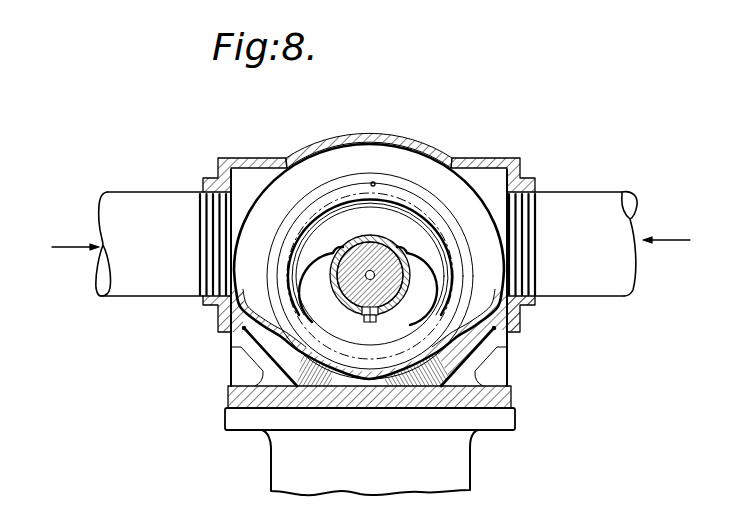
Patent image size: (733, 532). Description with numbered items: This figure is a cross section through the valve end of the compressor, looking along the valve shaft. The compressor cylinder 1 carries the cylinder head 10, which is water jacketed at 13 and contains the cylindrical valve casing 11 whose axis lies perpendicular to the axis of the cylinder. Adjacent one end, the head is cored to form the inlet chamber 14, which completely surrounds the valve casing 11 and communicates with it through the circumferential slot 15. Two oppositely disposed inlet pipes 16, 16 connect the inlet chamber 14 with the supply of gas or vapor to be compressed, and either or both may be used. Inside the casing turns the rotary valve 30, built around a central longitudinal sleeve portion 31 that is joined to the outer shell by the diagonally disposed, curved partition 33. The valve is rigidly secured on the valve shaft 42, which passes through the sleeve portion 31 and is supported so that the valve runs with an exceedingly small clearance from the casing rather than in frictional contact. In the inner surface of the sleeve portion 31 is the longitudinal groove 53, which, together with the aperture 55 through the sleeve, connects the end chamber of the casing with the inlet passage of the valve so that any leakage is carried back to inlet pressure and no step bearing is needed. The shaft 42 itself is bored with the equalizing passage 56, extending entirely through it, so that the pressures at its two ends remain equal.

The compressor cylinder 1 is at (461, 463).
The cylinder head 10 is at (410, 144).
The cylindrical valve casing 11 is at (374, 182).
The water jacket 13 is at (266, 352).
The inlet chamber 14 is at (434, 212).
The circumferential slot 15 is at (497, 160).
The inlet pipe 16 is at (143, 203).
The rotary valve 30 is at (323, 212).
The sleeve portion 31 is at (356, 245).
The partition 33 is at (368, 275).
The valve shaft 42 is at (343, 299).
The longitudinal groove 53 is at (380, 311).
The aperture 55 is at (370, 322).
The equalizing passage 56 is at (372, 271).